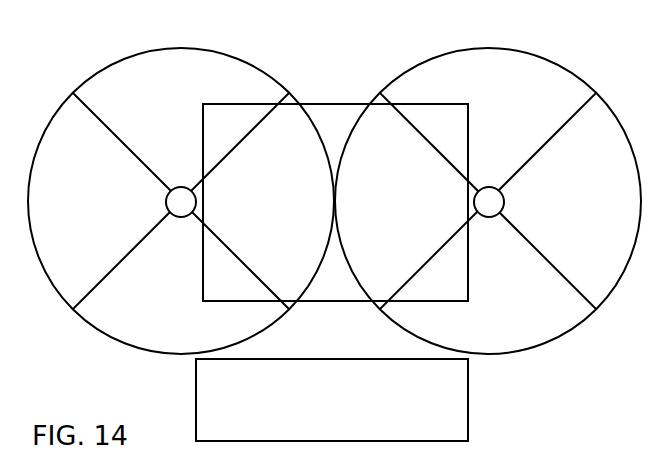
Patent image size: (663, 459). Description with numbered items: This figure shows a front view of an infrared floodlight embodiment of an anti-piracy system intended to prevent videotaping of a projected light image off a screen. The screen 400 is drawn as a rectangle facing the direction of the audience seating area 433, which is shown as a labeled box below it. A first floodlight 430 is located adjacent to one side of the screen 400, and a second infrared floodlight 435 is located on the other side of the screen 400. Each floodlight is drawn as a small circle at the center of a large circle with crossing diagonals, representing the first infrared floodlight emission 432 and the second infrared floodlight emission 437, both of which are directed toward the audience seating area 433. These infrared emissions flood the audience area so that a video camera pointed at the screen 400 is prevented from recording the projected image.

The screen 400 is at (330, 103).
The first floodlight 430 is at (176, 208).
The first infrared floodlight emission 432 is at (90, 75).
The audience seating area 433 is at (348, 389).
The second infrared floodlight 435 is at (496, 208).
The second infrared floodlight emission 437 is at (602, 97).